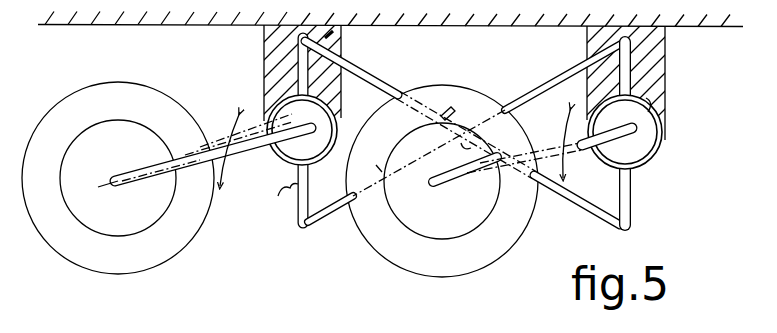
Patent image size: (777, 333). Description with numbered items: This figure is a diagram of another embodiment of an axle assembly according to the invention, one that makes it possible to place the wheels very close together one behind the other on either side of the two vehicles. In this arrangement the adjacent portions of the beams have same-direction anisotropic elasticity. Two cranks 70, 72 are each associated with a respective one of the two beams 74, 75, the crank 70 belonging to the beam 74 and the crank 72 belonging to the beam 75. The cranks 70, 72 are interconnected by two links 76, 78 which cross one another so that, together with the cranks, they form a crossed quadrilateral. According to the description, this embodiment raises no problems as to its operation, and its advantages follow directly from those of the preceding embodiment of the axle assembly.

The crank 70 is at (136, 178).
The crank 72 is at (632, 196).
The beam 74 is at (287, 112).
The beam 75 is at (655, 94).
The link 76 is at (374, 84).
The link 78 is at (530, 84).